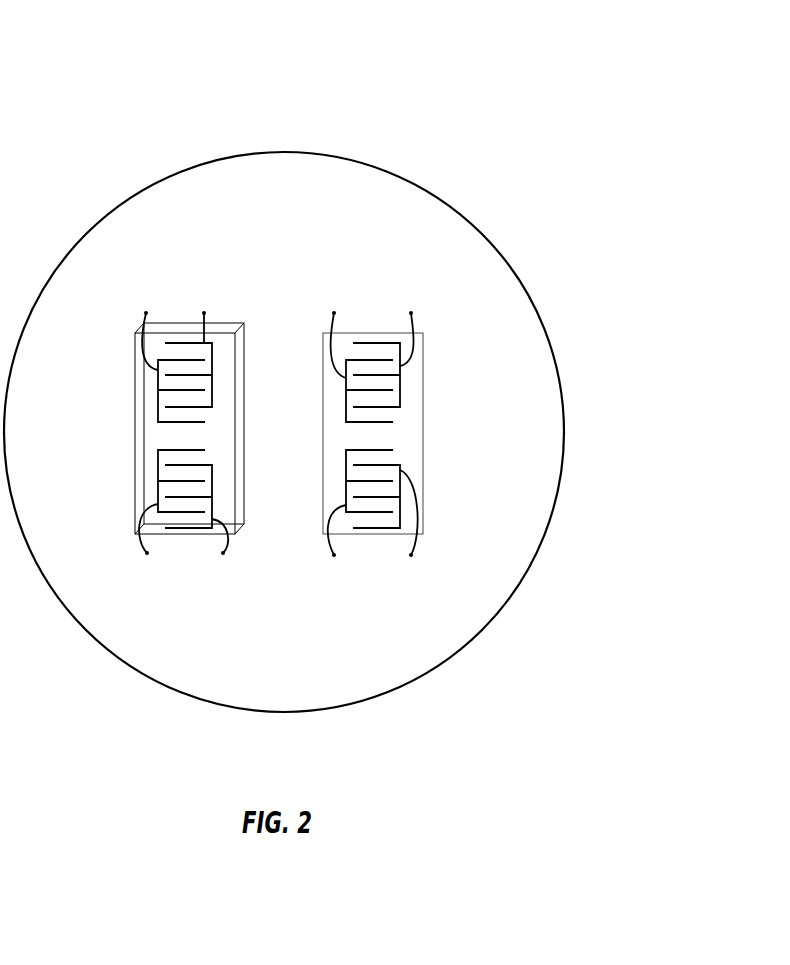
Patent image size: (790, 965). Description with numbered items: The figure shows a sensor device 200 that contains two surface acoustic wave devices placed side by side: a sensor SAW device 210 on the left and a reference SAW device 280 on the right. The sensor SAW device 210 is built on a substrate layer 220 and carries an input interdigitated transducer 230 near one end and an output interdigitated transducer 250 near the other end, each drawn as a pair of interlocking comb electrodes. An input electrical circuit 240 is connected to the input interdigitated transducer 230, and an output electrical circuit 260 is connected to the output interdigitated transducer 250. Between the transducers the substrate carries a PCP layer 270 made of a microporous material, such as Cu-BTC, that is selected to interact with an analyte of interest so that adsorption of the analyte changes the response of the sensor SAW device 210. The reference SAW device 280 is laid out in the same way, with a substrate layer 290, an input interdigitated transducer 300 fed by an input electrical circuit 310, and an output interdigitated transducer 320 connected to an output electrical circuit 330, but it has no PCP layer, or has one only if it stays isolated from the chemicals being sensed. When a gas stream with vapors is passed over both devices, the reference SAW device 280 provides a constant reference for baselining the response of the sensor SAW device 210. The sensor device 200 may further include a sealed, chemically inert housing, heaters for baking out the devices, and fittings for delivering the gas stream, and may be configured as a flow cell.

The sensor device 200 is at (107, 108).
The sensor SAW device 210 is at (185, 401).
The substrate layer 220 is at (238, 360).
The input interdigitated transducer 230 is at (157, 383).
The input electrical circuit 240 is at (142, 330).
The output interdigitated transducer 250 is at (157, 478).
The output electrical circuit 260 is at (228, 542).
The PCP layer 270 is at (218, 432).
The reference SAW device 280 is at (406, 401).
The substrate layer 290 is at (417, 435).
The input interdigitated transducer 300 is at (398, 368).
The input electrical circuit 310 is at (415, 327).
The output interdigitated transducer 320 is at (400, 470).
The output electrical circuit 330 is at (415, 542).